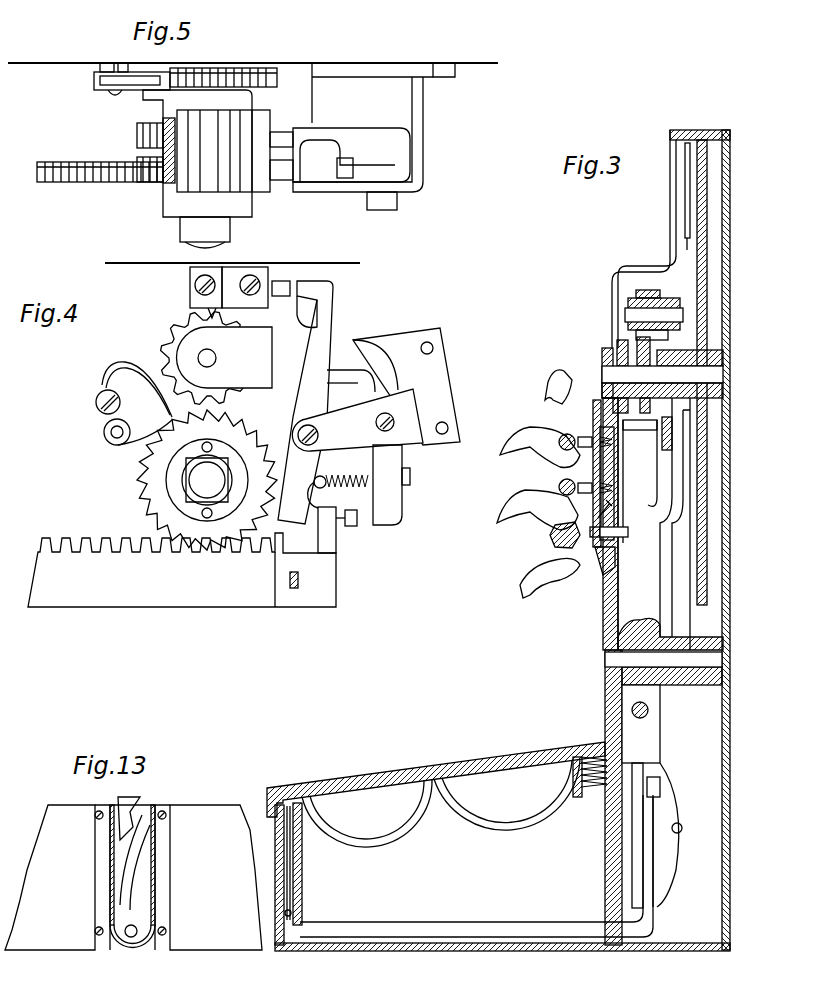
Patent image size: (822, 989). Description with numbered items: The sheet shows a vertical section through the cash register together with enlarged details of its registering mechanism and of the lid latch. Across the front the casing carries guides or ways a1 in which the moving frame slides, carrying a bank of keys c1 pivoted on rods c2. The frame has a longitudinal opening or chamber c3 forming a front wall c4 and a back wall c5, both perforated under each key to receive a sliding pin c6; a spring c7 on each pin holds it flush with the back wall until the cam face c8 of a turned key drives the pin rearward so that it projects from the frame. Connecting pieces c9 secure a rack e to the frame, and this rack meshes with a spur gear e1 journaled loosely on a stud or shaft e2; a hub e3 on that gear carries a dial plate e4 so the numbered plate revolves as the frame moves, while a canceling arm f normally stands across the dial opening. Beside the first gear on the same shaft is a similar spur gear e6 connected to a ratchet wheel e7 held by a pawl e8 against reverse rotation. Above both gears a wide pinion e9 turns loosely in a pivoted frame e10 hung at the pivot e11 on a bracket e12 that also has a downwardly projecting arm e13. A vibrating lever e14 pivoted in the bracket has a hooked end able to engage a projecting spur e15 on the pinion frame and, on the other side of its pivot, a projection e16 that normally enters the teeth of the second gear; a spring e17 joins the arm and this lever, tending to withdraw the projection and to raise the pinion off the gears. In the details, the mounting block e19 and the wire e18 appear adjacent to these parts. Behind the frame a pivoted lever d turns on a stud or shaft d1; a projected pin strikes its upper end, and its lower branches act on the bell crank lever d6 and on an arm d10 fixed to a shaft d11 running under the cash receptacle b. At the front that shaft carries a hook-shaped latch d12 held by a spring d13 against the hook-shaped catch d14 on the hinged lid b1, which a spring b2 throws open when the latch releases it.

In FIG. 5, the rack e is at (275, 72).
In FIG. 4, the rack e is at (182, 570).
In FIG. 3, the rack e is at (674, 447).
In FIG. 5, the spur gear e1 is at (165, 176).
In FIG. 4, the spur gear e1 is at (158, 498).
In FIG. 3, the spur gear e1 is at (676, 350).
In FIG. 5, the stud or shaft e2 is at (232, 249).
In FIG. 4, the stud or shaft e2 is at (205, 486).
In FIG. 3, the stud or shaft e2 is at (703, 377).
In FIG. 5, the hub e3 is at (183, 205).
In FIG. 4, the hub e3 is at (234, 500).
In FIG. 3, the hub e3 is at (692, 405).
In FIG. 3, the dial plate e4 is at (710, 563).
In FIG. 5, the spur gear e6 is at (137, 136).
In FIG. 3, the spur gear e6 is at (606, 399).
In FIG. 4, the ratchet wheel e7 is at (150, 447).
In FIG. 3, the ratchet wheel e7 is at (613, 345).
In FIG. 5, the pawl e8 is at (138, 90).
In FIG. 4, the pawl e8 is at (125, 448).
In FIG. 5, the pinion e9 is at (245, 170).
In FIG. 4, the pinion e9 is at (185, 334).
In FIG. 3, the pinion e9 is at (645, 298).
In FIG. 4, the pivoted frame e10 is at (197, 345).
In FIG. 4, the pivot e11 is at (390, 428).
In FIG. 5, the bracket e12 is at (395, 92).
In FIG. 4, the bracket e12 is at (435, 385).
In FIG. 4, the downwardly projecting arm e13 is at (398, 521).
In FIG. 5, the vibrating lever e14 is at (318, 160).
In FIG. 4, the vibrating lever e14 is at (323, 310).
In FIG. 5, the projecting spur e15 is at (280, 131).
In FIG. 4, the projecting spur e15 is at (283, 282).
In FIG. 4, the projection e16 is at (272, 517).
In FIG. 4, the spring e17 is at (355, 490).
In FIG. 4, the wire e18 is at (312, 525).
In FIG. 4, the screw block e19 is at (190, 305).
In FIG. 3, the canceling arm f is at (687, 204).
In FIG. 3, the keys c1 is at (548, 383).
In FIG. 3, the rods c2 is at (564, 436).
In FIG. 3, the opening or chamber c3 is at (605, 509).
In FIG. 3, the front wall c4 is at (614, 466).
In FIG. 3, the back wall c5 is at (615, 486).
In FIG. 3, the sliding pin c6 is at (629, 532).
In FIG. 3, the spring c7 is at (603, 473).
In FIG. 3, the cam face c8 is at (586, 448).
In FIG. 3, the connecting pieces c9 is at (637, 421).
In FIG. 3, the guides or ways a1 is at (600, 570).
In FIG. 3, the pivoted lever d is at (663, 524).
In FIG. 3, the stud or shaft d1 is at (605, 660).
In FIG. 3, the bell crank lever d6 is at (641, 742).
In FIG. 3, the arm d10 is at (652, 813).
In FIG. 3, the shaft d11 is at (488, 930).
In FIG. 13, the hook-shaped latch d12 is at (155, 813).
In FIG. 13, the spring d13 is at (128, 867).
In FIG. 13, the hook-shaped catch d14 is at (122, 797).
In FIG. 3, the cash receptacle b is at (428, 851).
In FIG. 3, the hinged lid b1 is at (335, 784).
In FIG. 3, the spring b2 is at (592, 765).